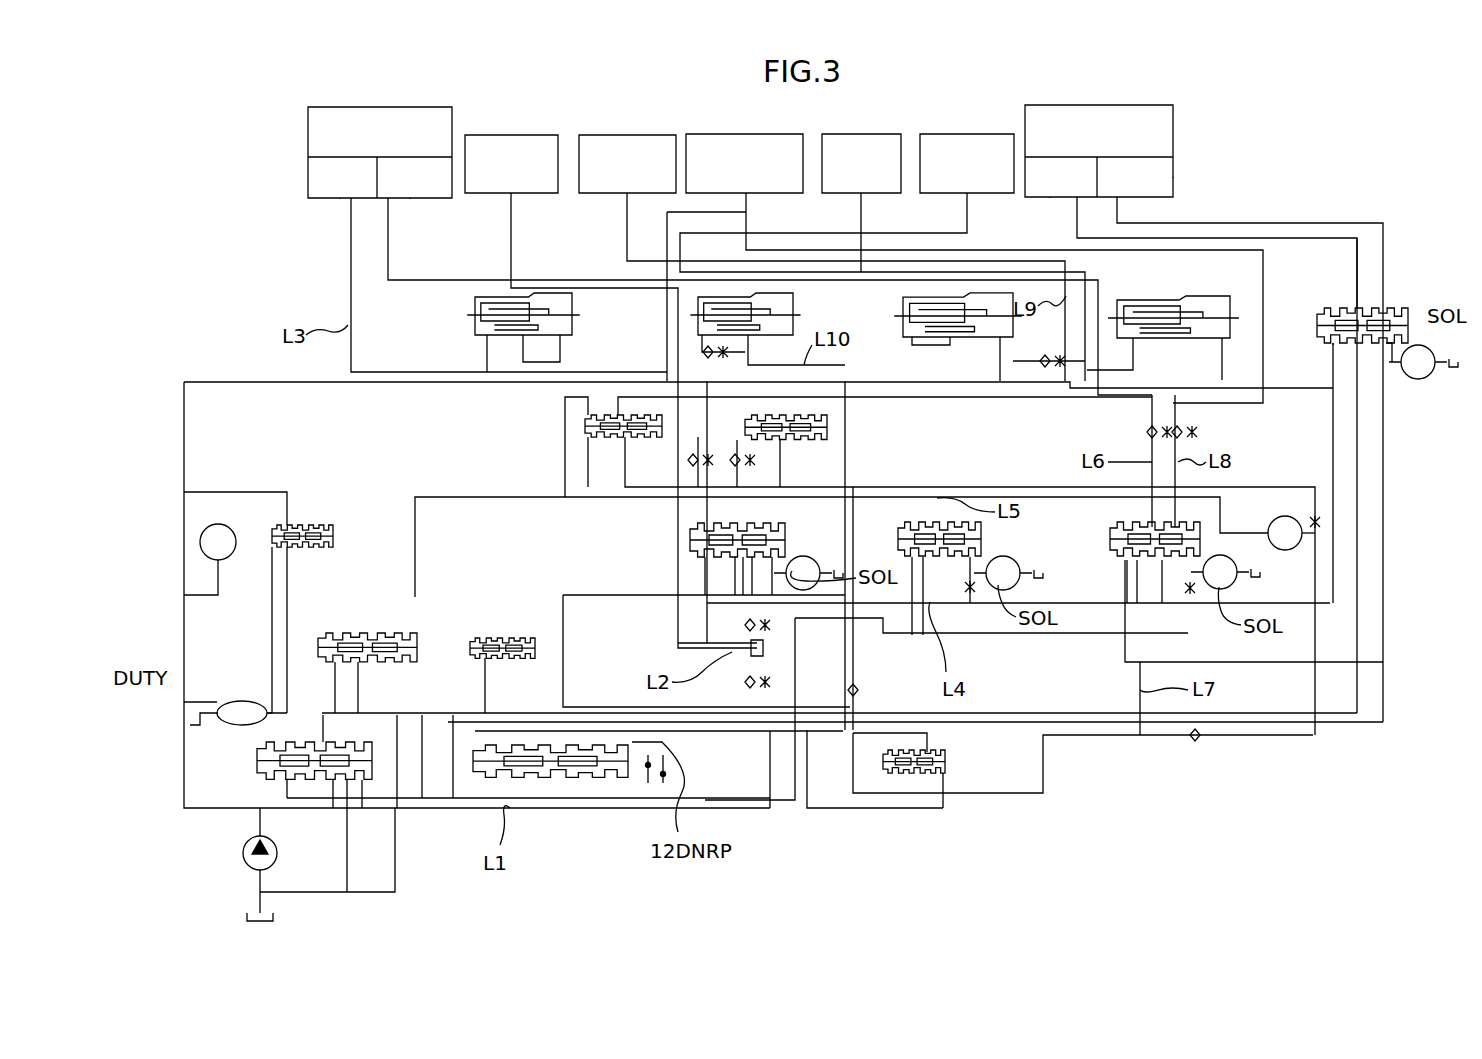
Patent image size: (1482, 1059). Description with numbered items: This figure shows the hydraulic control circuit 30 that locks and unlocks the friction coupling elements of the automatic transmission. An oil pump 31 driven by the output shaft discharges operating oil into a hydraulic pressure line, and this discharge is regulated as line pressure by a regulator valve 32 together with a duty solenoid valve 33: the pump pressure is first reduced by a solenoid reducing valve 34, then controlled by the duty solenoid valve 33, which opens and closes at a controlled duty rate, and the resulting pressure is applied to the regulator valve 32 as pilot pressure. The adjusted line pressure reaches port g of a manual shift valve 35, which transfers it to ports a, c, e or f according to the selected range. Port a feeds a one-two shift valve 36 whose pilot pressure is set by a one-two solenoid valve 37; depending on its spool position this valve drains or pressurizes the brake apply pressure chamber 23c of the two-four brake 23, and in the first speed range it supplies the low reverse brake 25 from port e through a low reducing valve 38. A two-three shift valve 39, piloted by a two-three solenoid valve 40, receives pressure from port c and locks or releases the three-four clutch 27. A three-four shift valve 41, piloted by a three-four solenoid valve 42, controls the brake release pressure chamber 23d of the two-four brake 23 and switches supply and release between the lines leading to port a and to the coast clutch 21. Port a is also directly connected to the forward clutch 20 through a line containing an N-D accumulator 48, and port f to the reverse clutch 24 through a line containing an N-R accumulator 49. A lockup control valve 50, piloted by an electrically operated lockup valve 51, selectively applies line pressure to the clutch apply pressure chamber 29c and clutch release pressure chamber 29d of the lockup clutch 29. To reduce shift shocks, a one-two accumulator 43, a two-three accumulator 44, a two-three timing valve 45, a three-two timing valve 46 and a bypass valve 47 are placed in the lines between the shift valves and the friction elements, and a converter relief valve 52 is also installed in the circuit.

The forward clutch 20 is at (636, 135).
The coast clutch 21 is at (736, 134).
The 2-4 brake 23 is at (394, 107).
The brake apply pressure chamber 23c is at (337, 198).
The brake release pressure chamber 23d is at (405, 198).
The reverse clutch 24 is at (520, 135).
The low reverse brake 25 is at (965, 134).
The 3-4 clutch 27 is at (864, 134).
The lockup clutch 29 is at (1120, 105).
The clutch apply pressure chamber 29c is at (1054, 197).
The clutch release pressure chamber 29d is at (1173, 177).
The hydraulic control circuit 30 is at (222, 368).
The oil pump 31 is at (244, 854).
The regulator valve 32 is at (257, 763).
The duty solenoid valve 33 is at (244, 702).
The solenoid reducing valve 34 is at (324, 524).
The manual shift valve 35 is at (486, 782).
The 1-2 shift valve 36 is at (775, 540).
The 1-2 solenoid valve 37 is at (799, 560).
The low reducing valve 38 is at (500, 638).
The 2-3 shift valve 39 is at (979, 535).
The 2-3 solenoid valve 40 is at (1028, 563).
The 3-4 shift valve 41 is at (1110, 539).
The 3-4 solenoid valve 42 is at (1238, 562).
The 1-2 accumulator 43 is at (572, 306).
The 2-3 accumulator 44 is at (1184, 300).
The 2-3 timing valve 45 is at (606, 437).
The 3-2 timing valve 46 is at (945, 754).
The bypass valve 47 is at (796, 440).
The N-D accumulator 48 is at (903, 318).
The N-R accumulator 49 is at (790, 304).
The lockup control valve 50 is at (1388, 304).
The lockup valve 51 is at (1414, 380).
The converter relief valve 52 is at (418, 632).